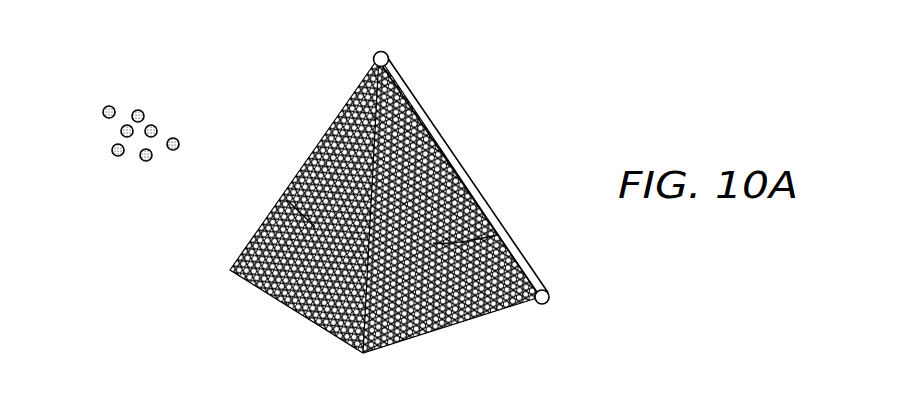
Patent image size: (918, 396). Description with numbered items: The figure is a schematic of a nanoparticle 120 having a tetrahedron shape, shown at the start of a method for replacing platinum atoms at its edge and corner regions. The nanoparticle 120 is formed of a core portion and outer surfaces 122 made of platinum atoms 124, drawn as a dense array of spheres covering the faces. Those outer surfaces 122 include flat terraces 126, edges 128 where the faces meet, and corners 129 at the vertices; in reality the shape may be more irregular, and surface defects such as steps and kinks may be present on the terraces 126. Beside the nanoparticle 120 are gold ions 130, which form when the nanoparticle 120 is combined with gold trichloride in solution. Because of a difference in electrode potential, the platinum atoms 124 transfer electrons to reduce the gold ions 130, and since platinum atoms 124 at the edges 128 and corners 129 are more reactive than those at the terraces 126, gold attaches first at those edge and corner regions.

The nanoparticle 120 is at (245, 75).
The outer surfaces 122 is at (299, 146).
The platinum atoms 124 is at (275, 220).
The terraces 126 is at (497, 235).
The edges 128 is at (465, 158).
The corners 129 is at (386, 53).
The gold ions 130 is at (104, 119).